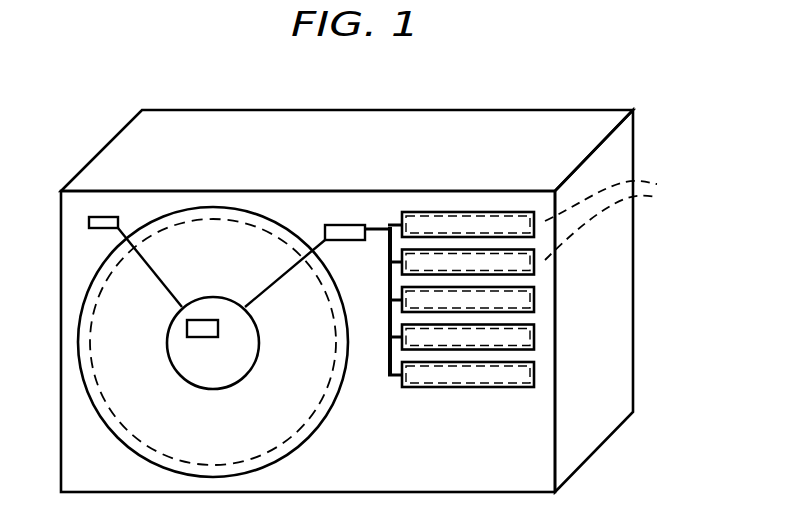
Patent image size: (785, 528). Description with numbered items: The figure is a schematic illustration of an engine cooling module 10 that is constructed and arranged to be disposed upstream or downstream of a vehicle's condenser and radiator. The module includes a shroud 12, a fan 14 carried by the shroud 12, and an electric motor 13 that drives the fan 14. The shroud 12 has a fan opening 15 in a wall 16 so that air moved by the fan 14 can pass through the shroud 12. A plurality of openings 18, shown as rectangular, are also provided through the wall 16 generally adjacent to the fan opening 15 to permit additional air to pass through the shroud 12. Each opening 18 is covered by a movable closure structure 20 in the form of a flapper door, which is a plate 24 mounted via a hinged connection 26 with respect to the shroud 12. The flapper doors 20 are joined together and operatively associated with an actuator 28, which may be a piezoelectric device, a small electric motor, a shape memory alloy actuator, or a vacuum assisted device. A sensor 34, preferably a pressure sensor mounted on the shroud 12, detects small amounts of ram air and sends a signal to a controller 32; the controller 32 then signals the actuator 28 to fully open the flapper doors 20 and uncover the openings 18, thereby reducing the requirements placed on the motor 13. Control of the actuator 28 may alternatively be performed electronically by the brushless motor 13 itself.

The engine cooling module 10 is at (386, 265).
The shroud 12 is at (623, 253).
The electric motor 13 is at (217, 379).
The fan 14 is at (302, 404).
The fan opening 15 is at (102, 417).
The wall 16 is at (504, 464).
The opening 18 is at (614, 219).
The closure structure 20 is at (423, 212).
The plate 24 is at (453, 389).
The hinged connection 26 is at (520, 362).
The actuator 28 is at (347, 226).
The controller 32 is at (203, 322).
The sensor 34 is at (89, 221).